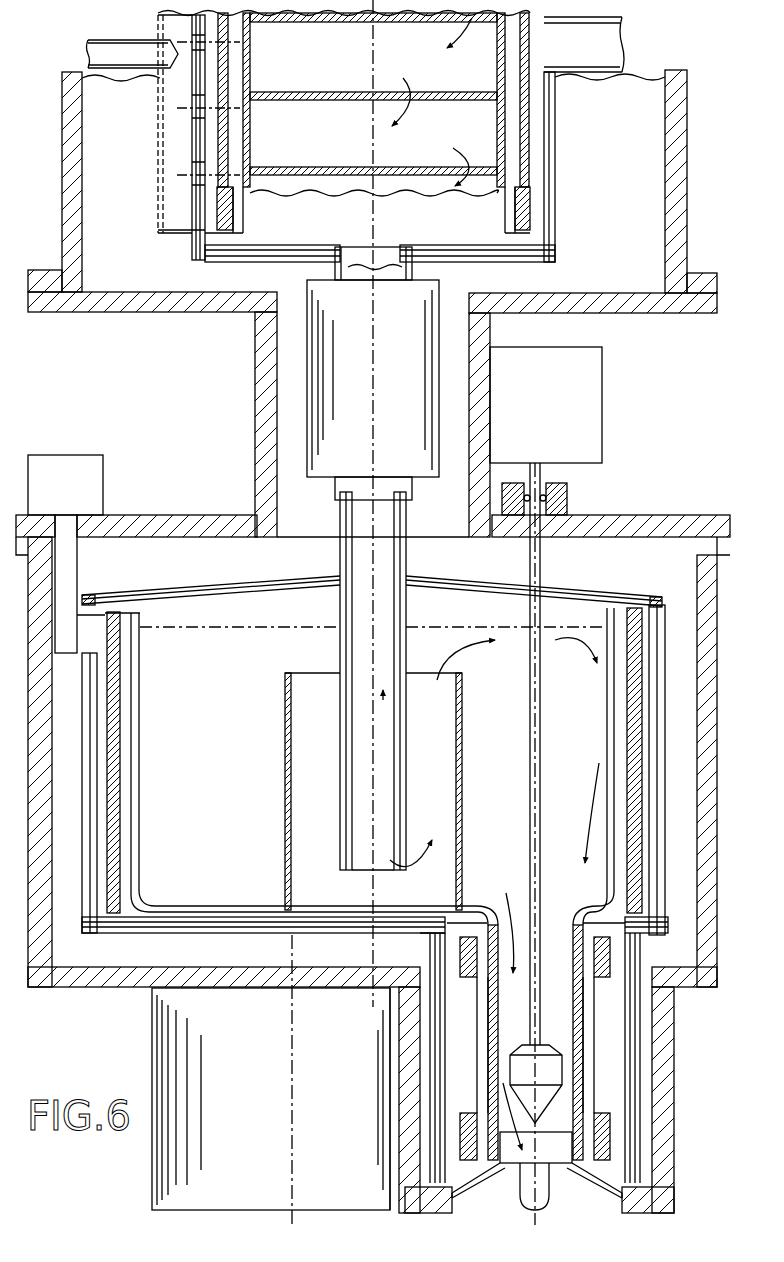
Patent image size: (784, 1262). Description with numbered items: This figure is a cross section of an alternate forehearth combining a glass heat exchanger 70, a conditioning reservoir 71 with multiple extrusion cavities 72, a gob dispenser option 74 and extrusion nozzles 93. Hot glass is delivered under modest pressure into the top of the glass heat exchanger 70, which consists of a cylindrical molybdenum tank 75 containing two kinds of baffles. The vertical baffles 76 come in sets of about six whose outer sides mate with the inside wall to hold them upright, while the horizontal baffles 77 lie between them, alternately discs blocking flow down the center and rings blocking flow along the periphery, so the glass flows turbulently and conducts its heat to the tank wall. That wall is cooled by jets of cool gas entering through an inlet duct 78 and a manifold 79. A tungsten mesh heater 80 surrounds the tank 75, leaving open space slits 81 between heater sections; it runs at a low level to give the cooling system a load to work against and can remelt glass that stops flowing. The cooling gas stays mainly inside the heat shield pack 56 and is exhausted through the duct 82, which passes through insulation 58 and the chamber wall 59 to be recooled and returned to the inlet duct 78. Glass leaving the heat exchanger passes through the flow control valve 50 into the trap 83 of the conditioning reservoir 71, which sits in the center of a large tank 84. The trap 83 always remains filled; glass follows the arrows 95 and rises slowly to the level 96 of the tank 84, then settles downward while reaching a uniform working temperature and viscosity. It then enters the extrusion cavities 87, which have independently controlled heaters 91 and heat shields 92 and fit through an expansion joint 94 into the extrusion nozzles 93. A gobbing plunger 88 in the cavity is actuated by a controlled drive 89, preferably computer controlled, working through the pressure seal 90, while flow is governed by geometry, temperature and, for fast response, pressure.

The flow control valve 50 is at (312, 372).
The heat shield pack 56 is at (200, 260).
The insulation 58 is at (649, 282).
The chamber wall 59 is at (687, 225).
The glass heat exchanger 70 is at (635, 152).
The conditioning reservoir 71 is at (689, 795).
The extrusion cavities 72 is at (649, 1087).
The gob dispenser option 74 is at (562, 1122).
The cylindrical molybdenum tank 75 is at (499, 108).
The vertical baffles 76 is at (277, 187).
The horizontal baffles 77 is at (298, 177).
The inlet duct 78 is at (118, 40).
The manifold 79 is at (160, 22).
The tungsten mesh heater 80 is at (217, 208).
The open space slits 81 is at (220, 80).
The duct 82 is at (619, 33).
The trap 83 is at (317, 673).
The large tank 84 is at (140, 697).
The extrusion cavities 87 is at (585, 1030).
The gobbing plunger 88 is at (562, 1060).
The controlled drive 89 is at (602, 392).
The pressure seal 90 is at (567, 492).
The heaters 91 is at (610, 968).
The heat shields 92 is at (640, 1007).
The extrusion nozzles 93 is at (592, 1172).
The expansion joint 94 is at (579, 1143).
The arrows 95 is at (459, 640).
The level 96 is at (555, 640).